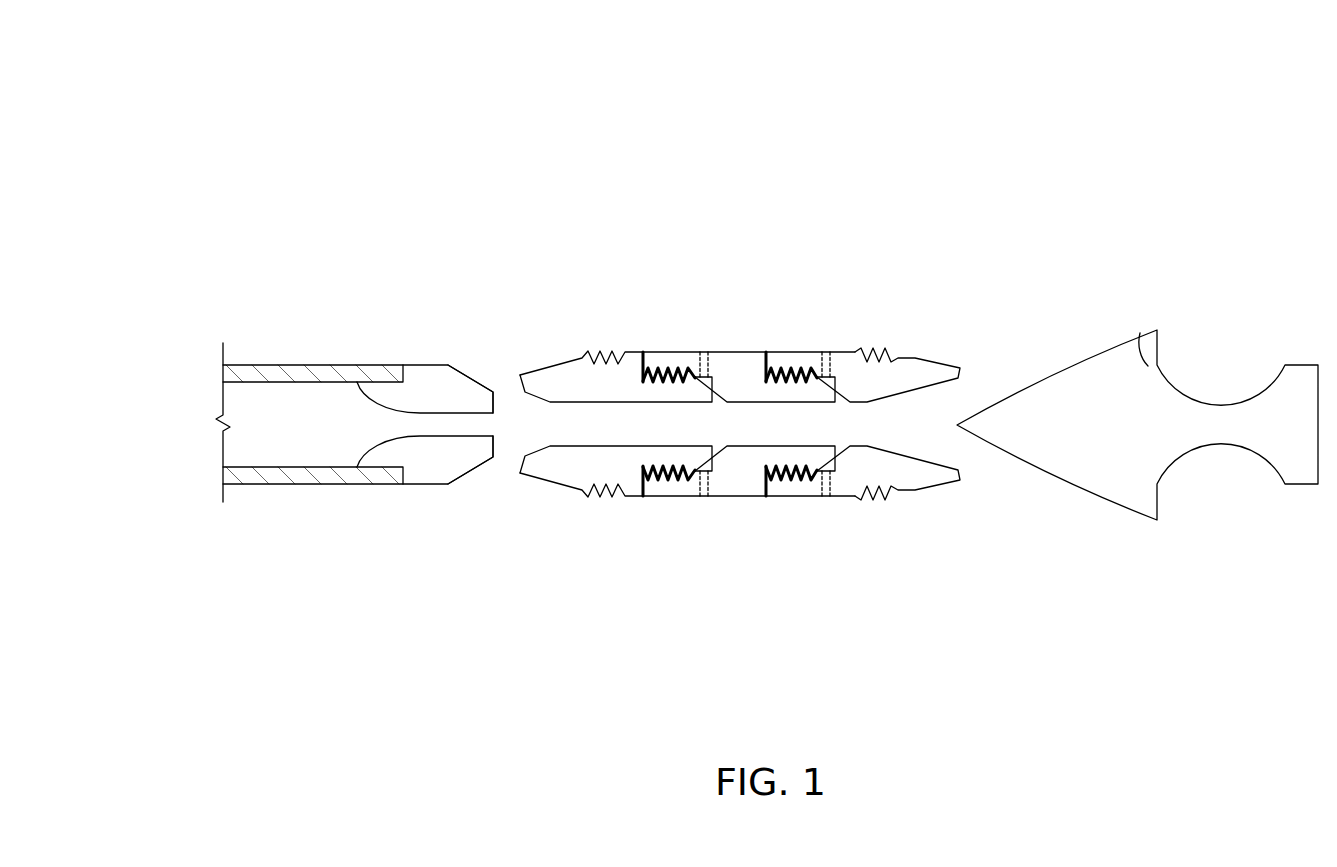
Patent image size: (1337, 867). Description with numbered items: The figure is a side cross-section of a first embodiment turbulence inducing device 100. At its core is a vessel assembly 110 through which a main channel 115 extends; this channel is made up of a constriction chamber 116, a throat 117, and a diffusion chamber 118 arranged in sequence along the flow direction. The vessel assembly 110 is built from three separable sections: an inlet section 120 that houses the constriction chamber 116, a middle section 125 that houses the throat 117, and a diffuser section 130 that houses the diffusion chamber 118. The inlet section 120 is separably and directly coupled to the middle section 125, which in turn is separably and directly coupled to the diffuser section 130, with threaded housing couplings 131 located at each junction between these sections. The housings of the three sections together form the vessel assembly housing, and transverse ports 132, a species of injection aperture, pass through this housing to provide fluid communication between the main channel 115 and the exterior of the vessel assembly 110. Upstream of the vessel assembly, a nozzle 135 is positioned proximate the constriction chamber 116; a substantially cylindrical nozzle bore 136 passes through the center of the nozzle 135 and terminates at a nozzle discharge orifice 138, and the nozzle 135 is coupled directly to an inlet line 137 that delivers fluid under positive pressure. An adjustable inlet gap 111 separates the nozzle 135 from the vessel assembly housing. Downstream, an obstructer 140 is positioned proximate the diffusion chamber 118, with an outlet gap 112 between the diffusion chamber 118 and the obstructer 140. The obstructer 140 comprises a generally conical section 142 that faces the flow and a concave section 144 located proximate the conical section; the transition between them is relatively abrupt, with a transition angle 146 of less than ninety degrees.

The turbulence inducing device 100 is at (874, 110).
The vessel assembly 110 is at (729, 356).
The inlet gap 111 is at (499, 424).
The outlet gap 112 is at (972, 392).
The main channel 115 is at (700, 424).
The constriction chamber 116 is at (549, 422).
The throat 117 is at (733, 420).
The diffusion chamber 118 is at (897, 420).
The inlet section 120 is at (560, 362).
The middle section 125 is at (735, 352).
The diffuser section 130 is at (917, 356).
The housing couplings 131 is at (665, 368).
The transverse ports 132 is at (703, 352).
The nozzle 135 is at (437, 484).
The nozzle bore 136 is at (462, 423).
The inlet line 137 is at (280, 466).
The nozzle discharge orifice 138 is at (507, 377).
The obstructer 140 is at (1137, 427).
The conical section 142 is at (1099, 424).
The concave section 144 is at (1289, 492).
The transition angle 146 is at (1158, 365).